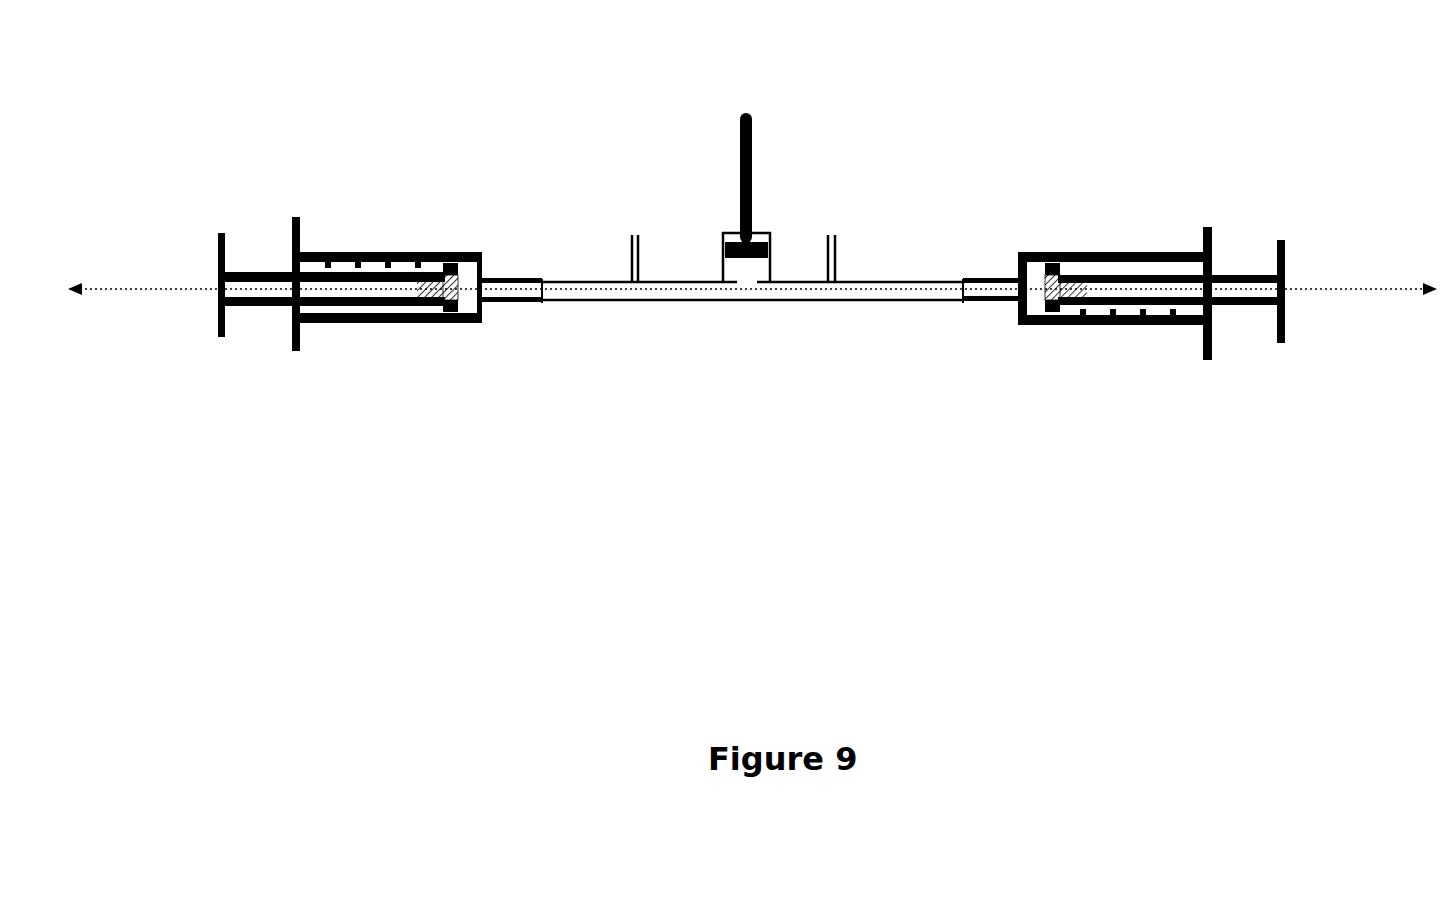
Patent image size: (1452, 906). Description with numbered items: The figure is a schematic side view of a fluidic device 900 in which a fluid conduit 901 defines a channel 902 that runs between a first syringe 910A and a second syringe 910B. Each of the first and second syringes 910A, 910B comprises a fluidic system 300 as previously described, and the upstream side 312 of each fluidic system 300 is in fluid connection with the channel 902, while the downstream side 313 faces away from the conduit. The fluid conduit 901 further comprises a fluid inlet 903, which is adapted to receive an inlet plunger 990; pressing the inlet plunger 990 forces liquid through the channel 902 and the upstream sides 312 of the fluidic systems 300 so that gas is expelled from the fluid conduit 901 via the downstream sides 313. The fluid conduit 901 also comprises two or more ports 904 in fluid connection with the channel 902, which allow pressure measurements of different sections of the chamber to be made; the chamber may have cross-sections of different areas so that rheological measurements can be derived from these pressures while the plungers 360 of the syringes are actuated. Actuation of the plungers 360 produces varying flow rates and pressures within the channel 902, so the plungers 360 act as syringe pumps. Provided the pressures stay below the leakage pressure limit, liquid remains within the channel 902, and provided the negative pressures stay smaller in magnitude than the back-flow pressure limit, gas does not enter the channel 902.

The fluidic device 900 is at (393, 100).
The inlet plunger 990 is at (713, 157).
The first syringe 910A is at (325, 218).
The second syringe 910B is at (1110, 210).
The ports 904 is at (629, 249).
The fluid inlet 903 is at (720, 268).
The fluid conduit 901 is at (553, 250).
The channel 902 is at (658, 287).
The plunger 360 is at (265, 316).
The downstream side 313 is at (402, 294).
The upstream side 312 is at (468, 298).
The fluidic system 300 is at (300, 414).